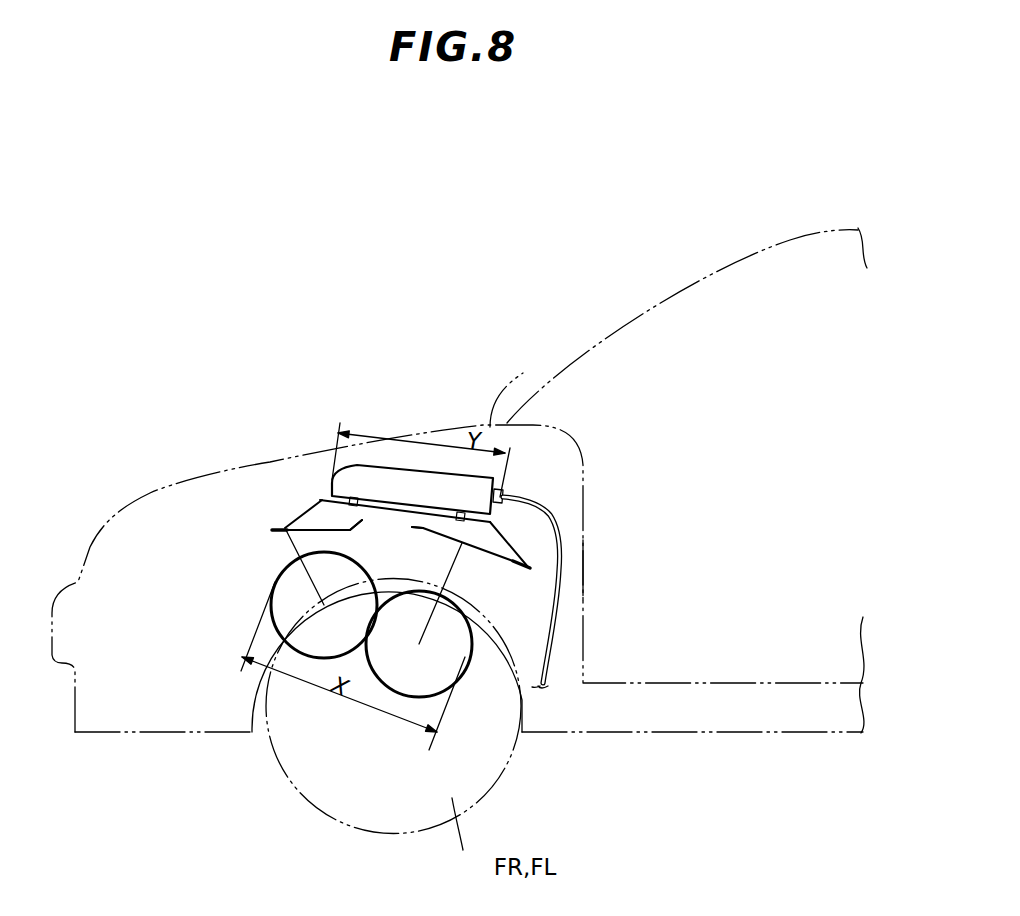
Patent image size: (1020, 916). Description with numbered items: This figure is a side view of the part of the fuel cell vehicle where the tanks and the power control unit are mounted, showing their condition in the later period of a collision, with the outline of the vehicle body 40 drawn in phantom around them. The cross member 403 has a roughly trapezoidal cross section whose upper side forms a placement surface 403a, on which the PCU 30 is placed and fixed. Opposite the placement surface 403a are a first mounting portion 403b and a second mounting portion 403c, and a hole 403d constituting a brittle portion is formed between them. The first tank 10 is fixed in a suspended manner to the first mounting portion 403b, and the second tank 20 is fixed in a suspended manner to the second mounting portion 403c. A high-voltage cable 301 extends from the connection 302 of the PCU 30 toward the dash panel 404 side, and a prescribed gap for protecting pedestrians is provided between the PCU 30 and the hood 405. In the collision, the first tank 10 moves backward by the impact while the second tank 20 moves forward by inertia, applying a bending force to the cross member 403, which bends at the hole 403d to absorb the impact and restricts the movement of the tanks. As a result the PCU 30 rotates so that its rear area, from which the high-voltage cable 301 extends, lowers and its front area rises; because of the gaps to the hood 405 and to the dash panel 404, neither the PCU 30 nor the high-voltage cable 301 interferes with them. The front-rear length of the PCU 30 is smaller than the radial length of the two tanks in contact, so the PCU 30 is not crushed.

The first tank 10 is at (320, 640).
The second tank 20 is at (443, 670).
The PCU 30 is at (415, 485).
The vehicle body 40 is at (175, 513).
The high-voltage cable 301 is at (553, 516).
The connection 302 is at (501, 491).
The cross member 403 is at (357, 518).
The placement surface 403a is at (326, 493).
The first mounting portion 403b is at (308, 533).
The second mounting portion 403c is at (482, 560).
The hole 403d is at (392, 528).
The dash panel 404 is at (585, 543).
The hood 405 is at (524, 372).